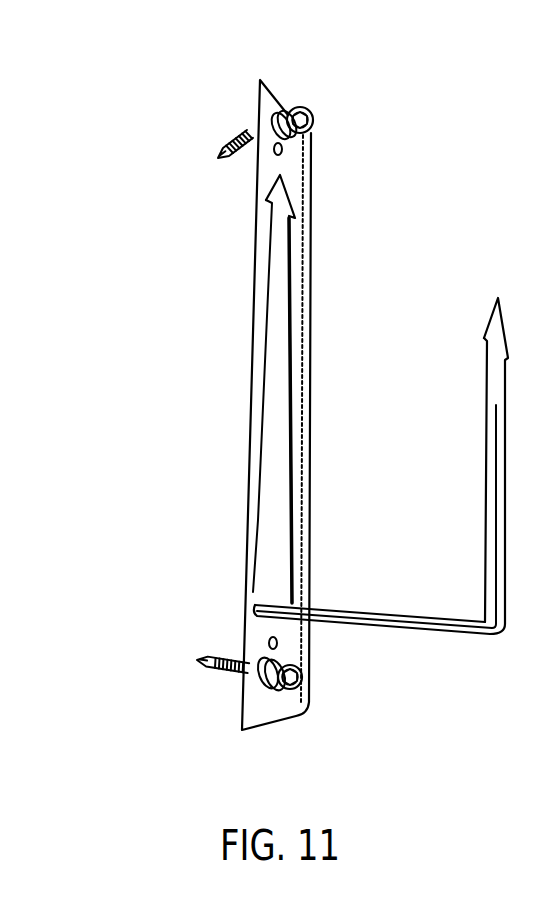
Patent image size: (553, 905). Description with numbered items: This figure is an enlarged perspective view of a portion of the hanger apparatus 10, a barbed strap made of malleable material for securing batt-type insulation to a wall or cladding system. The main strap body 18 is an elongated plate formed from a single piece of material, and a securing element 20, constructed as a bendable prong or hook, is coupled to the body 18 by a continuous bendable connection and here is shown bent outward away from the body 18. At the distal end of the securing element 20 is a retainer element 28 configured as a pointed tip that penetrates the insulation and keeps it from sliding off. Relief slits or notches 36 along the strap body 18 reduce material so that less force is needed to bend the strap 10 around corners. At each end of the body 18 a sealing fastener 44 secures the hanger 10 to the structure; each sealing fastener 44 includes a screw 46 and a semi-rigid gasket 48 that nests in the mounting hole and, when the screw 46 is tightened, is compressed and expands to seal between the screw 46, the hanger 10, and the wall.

The hanger apparatus 10 is at (182, 239).
The main strap body 18 is at (305, 297).
The securing element 20 is at (487, 407).
The retainer element 28 is at (487, 332).
The relief slits or notches 36 is at (330, 193).
The sealing fastener 44 is at (352, 108).
The screw 46 is at (230, 145).
The gasket 48 is at (280, 110).